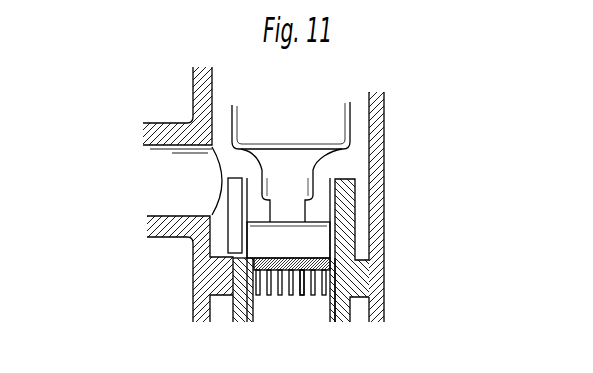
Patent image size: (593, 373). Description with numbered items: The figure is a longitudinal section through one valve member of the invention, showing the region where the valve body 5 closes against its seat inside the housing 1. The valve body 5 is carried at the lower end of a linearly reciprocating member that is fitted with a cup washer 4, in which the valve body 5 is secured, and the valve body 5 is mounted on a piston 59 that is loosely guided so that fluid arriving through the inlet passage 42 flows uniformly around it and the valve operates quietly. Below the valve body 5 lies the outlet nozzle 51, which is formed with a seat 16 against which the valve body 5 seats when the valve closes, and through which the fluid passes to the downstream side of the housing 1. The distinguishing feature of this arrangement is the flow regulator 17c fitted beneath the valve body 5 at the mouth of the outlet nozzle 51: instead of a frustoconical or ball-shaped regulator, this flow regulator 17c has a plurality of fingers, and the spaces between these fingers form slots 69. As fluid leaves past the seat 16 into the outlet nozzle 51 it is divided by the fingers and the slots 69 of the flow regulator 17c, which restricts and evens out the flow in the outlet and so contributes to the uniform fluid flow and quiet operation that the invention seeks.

The housing 1 is at (380, 114).
The inlet passage 42 is at (195, 177).
The cup washer 4 is at (263, 238).
The valve body 5 is at (315, 257).
The seat 16 is at (337, 275).
The outlet nozzle 51 is at (260, 318).
The piston 59 is at (300, 180).
The slots 69 is at (273, 297).
The flow regulator 17c is at (302, 297).